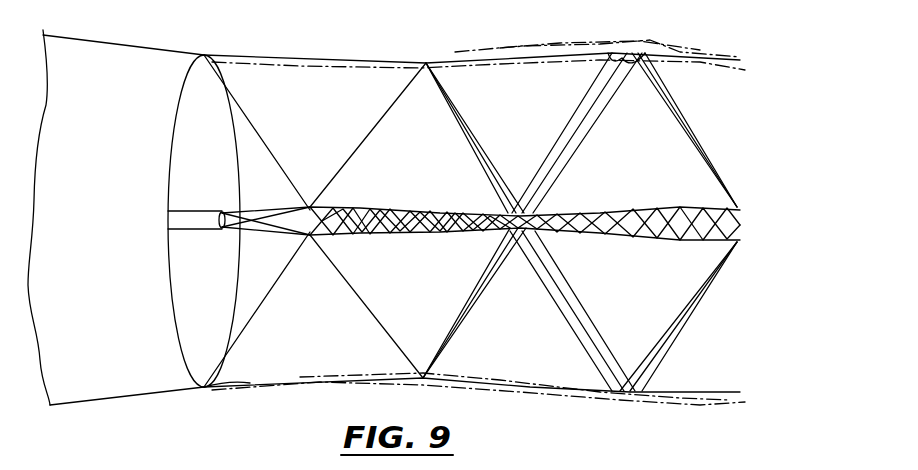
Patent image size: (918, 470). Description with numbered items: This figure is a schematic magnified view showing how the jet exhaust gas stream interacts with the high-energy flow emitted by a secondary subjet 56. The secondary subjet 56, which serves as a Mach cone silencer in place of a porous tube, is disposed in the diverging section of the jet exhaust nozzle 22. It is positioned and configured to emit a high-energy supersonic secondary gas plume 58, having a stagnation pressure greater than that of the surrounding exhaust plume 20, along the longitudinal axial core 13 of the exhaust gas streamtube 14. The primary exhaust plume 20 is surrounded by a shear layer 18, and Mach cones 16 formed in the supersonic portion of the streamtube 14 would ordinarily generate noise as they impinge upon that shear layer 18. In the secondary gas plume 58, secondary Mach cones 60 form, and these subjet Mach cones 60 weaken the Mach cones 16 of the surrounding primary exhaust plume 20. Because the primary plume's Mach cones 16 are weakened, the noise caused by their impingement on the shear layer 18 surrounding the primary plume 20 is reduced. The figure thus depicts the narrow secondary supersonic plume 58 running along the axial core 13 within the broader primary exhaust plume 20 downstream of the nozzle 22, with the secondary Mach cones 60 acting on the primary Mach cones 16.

The jet exhaust nozzle 22 is at (122, 75).
The exhaust plume shear layer 18 is at (287, 55).
The secondary subjet 56 is at (190, 218).
The secondary gas plume 58 is at (350, 208).
The Mach cones 16 is at (255, 317).
The jet exhaust gas streamtube 14 is at (240, 365).
The longitudinal axial core region 13 is at (473, 198).
The exhaust plume 20 is at (523, 295).
The secondary Mach cones 60 is at (649, 228).